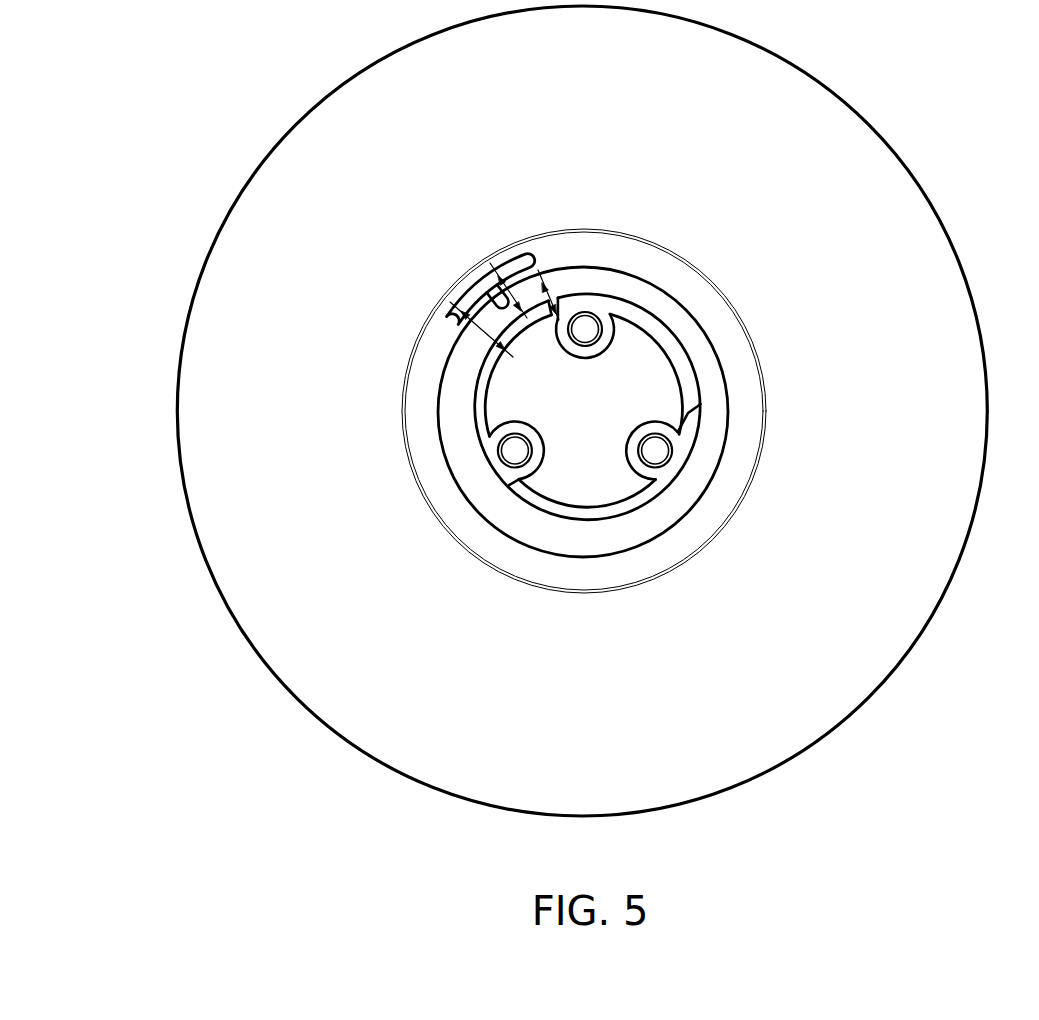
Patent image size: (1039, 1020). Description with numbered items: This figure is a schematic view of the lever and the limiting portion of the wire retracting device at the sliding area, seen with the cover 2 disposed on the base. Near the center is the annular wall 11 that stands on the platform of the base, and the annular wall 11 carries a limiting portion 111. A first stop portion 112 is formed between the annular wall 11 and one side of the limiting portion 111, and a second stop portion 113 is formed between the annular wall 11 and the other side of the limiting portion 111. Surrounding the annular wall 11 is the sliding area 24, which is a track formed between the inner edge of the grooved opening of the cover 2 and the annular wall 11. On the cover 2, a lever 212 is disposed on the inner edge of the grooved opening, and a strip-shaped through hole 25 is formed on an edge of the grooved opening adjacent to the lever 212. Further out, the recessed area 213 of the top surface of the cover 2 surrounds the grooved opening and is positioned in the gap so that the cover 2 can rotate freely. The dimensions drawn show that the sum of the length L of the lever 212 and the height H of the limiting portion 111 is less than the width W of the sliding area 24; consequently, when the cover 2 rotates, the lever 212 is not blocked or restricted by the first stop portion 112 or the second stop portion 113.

The cover 2 is at (945, 390).
The annular wall 11 is at (637, 500).
The limiting portion 111 is at (663, 336).
The first stop portion 112 is at (557, 297).
The second stop portion 113 is at (705, 405).
The sliding area 24 is at (527, 528).
The strip-shaped through hole 25 is at (483, 285).
The lever 212 is at (457, 338).
The recessed area 213 is at (428, 477).
The length of the lever L is at (508, 266).
The width of the sliding area W is at (482, 338).
The height of the limiting portion H is at (556, 322).